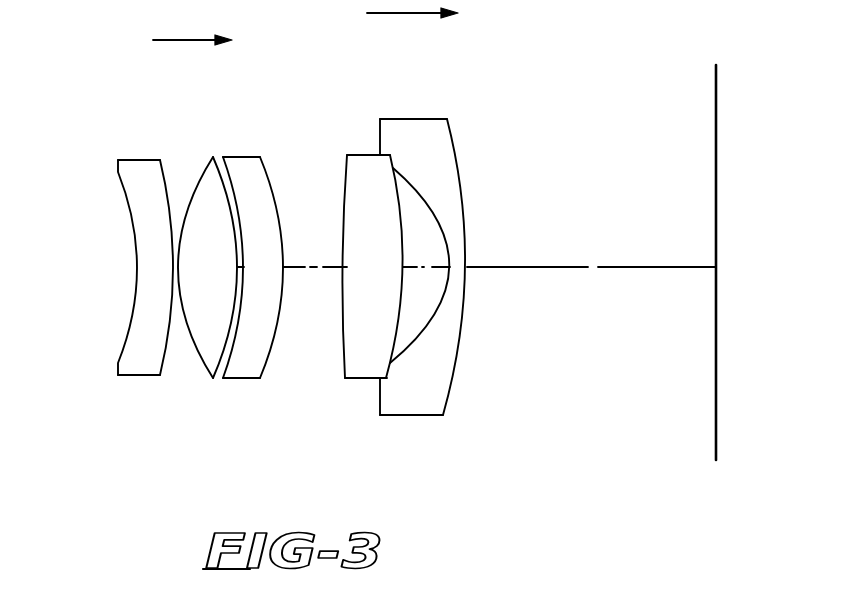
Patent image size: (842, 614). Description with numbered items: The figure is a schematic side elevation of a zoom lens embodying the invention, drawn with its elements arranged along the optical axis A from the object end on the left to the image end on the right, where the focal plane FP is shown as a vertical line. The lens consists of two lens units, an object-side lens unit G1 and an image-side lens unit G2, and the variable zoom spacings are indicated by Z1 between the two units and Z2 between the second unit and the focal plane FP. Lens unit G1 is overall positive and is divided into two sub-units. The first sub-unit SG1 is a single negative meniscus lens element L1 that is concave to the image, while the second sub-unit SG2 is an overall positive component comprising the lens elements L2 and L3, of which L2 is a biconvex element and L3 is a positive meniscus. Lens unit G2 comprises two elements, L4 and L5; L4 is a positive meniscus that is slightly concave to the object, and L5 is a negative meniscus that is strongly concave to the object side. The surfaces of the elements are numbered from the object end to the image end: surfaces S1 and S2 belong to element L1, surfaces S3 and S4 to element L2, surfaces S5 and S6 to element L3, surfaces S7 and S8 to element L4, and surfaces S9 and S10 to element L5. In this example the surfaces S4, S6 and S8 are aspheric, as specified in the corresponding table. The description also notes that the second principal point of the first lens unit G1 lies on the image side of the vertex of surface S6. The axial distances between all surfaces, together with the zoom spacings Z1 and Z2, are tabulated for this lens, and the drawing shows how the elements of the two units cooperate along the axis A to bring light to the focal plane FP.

The first lens unit G1 is at (283, 120).
The second lens unit G2 is at (318, 93).
The first sub-unit SG1 is at (98, 408).
The second sub-unit SG2 is at (188, 408).
The lens element L1 is at (138, 160).
The biconvex lens element L2 is at (213, 157).
The positive meniscus lens element L3 is at (247, 157).
The positive meniscus lens element L4 is at (365, 155).
The negative meniscus lens element L5 is at (449, 134).
The lens surface S1 is at (137, 297).
The lens surface S2 is at (170, 333).
The lens surface S3 is at (194, 355).
The aspheric lens surface S4 is at (213, 378).
The lens surface S5 is at (228, 356).
The aspheric lens surface S6 is at (277, 334).
The lens surface S7 is at (343, 337).
The aspheric lens surface S8 is at (403, 227).
The lens surface S9 is at (437, 322).
The lens surface S10 is at (457, 372).
The variable zoom spacing Z1 is at (315, 254).
The variable zoom spacing Z2 is at (591, 253).
The optical axis A is at (662, 265).
The focal plane FP is at (716, 208).